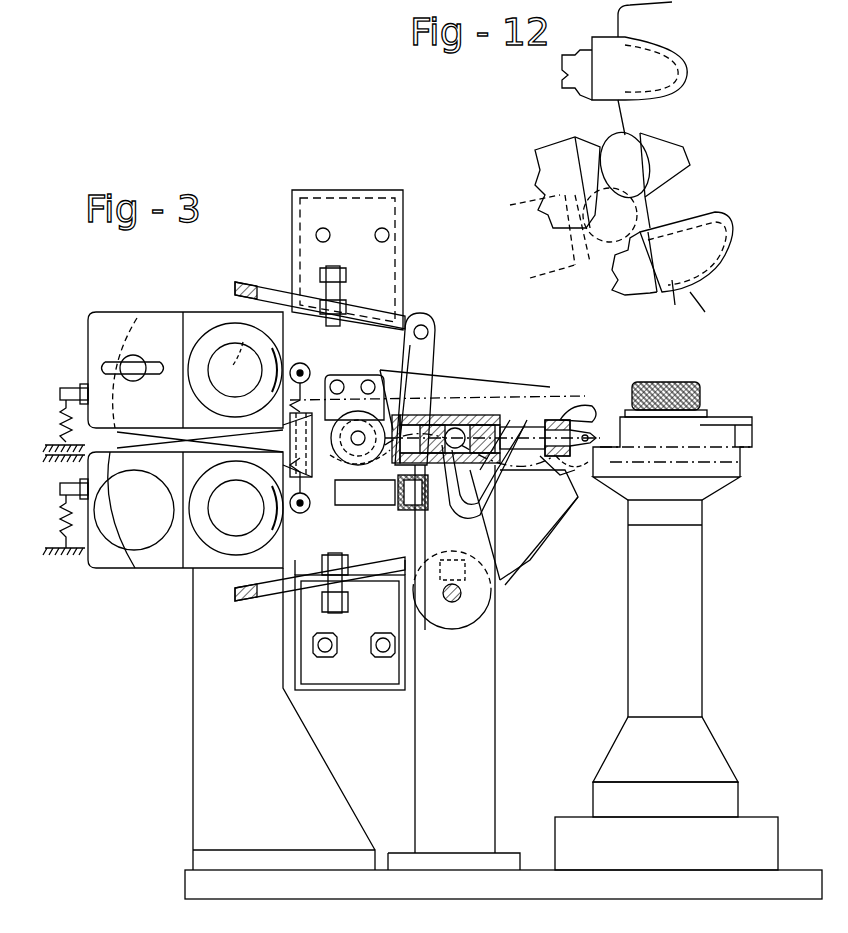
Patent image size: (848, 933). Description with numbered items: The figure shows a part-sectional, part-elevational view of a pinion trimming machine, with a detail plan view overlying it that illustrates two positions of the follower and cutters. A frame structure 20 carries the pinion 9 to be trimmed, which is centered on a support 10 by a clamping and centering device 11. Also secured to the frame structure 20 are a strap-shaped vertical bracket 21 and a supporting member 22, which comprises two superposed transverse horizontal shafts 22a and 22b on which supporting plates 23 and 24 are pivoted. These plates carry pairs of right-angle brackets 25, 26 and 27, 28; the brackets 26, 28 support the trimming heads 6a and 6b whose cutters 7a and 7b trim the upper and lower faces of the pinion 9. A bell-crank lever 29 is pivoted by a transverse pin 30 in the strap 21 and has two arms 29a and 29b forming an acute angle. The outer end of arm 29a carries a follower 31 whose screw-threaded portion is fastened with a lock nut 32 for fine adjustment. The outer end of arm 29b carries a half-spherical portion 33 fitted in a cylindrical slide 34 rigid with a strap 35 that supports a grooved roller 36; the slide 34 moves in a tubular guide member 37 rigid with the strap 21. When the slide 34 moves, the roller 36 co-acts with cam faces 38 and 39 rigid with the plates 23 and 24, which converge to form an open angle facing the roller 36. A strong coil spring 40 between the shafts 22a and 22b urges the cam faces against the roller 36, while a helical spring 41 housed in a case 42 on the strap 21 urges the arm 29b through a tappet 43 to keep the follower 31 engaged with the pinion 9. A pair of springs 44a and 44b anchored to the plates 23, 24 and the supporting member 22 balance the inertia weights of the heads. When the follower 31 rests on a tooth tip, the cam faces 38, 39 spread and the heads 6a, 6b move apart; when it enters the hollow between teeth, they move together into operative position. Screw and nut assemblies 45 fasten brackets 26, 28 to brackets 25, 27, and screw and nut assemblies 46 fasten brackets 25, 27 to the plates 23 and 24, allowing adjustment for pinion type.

In FIG. 3, the frame structure 20 is at (183, 870).
In FIG. 3, the strap-shaped vertical bracket 21 is at (483, 712).
In FIG. 3, the supporting member 22 is at (55, 548).
In FIG. 3, the transverse horizontal shaft 22a is at (220, 365).
In FIG. 3, the transverse horizontal shaft 22b is at (233, 525).
In FIG. 3, the supporting plate 23 is at (215, 318).
In FIG. 3, the supporting plate 24 is at (150, 565).
In FIG. 3, the right-angle bracket 25 is at (385, 292).
In FIG. 3, the right-angle bracket 26 is at (438, 345).
In FIG. 3, the right-angle bracket 27 is at (300, 622).
In FIG. 3, the right-angle bracket 28 is at (250, 595).
In FIG. 3, the bell-crank lever 29 is at (512, 565).
In FIG. 3, the arm 29a is at (565, 510).
In FIG. 3, the arm 29b is at (515, 418).
In FIG. 3, the transverse pin 30 is at (452, 603).
In FIG. 3, the follower 31 is at (575, 465).
In FIG. 12, the follower 31 is at (652, 135).
In FIG. 3, the lock nut 32 is at (555, 420).
In FIG. 3, the half-spherical portion 33 is at (458, 430).
In FIG. 3, the cylindrical slide 34 is at (432, 430).
In FIG. 3, the strap 35 is at (383, 368).
In FIG. 3, the grooved roller 36 is at (368, 468).
In FIG. 3, the tubular guide member 37 is at (392, 505).
In FIG. 3, the cam face 38 is at (348, 420).
In FIG. 3, the cam face 39 is at (312, 446).
In FIG. 3, the coil spring 40 is at (288, 440).
In FIG. 3, the helical spring 41 is at (430, 512).
In FIG. 3, the case 42 is at (428, 568).
In FIG. 3, the tappet 43 is at (500, 560).
In FIG. 3, the spring 44a is at (62, 405).
In FIG. 3, the spring 44b is at (60, 548).
In FIG. 3, the screw and nut assemblies 45 is at (330, 290).
In FIG. 3, the screw and nut assemblies 46 is at (382, 228).
In FIG. 3, the trimming head 6a is at (485, 375).
In FIG. 3, the trimming head 6b is at (520, 480).
In FIG. 3, the milling cutter 7a is at (578, 410).
In FIG. 12, the milling cutter 7a is at (665, 38).
In FIG. 3, the milling cutter 7b is at (587, 455).
In FIG. 12, the milling cutter 7b is at (672, 263).
In FIG. 3, the pinion 9 is at (730, 416).
In FIG. 12, the pinion 9 is at (680, 177).
In FIG. 3, the support 10 is at (708, 478).
In FIG. 3, the clamping and centering device 11 is at (700, 395).